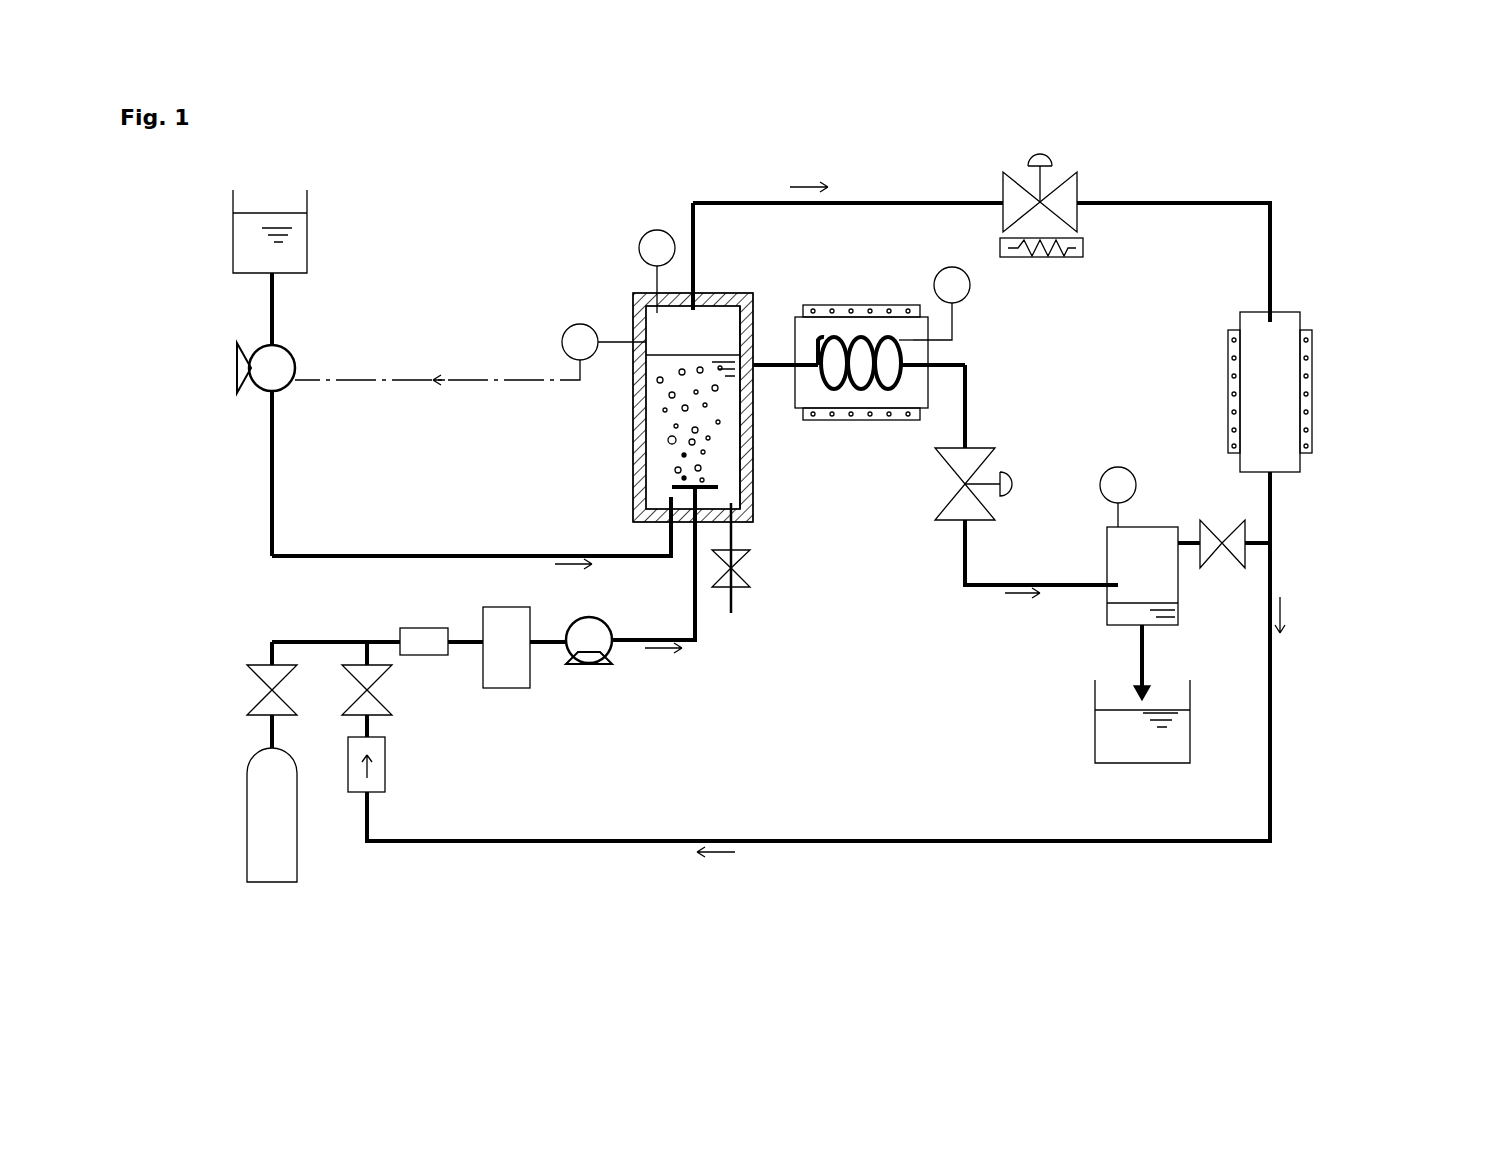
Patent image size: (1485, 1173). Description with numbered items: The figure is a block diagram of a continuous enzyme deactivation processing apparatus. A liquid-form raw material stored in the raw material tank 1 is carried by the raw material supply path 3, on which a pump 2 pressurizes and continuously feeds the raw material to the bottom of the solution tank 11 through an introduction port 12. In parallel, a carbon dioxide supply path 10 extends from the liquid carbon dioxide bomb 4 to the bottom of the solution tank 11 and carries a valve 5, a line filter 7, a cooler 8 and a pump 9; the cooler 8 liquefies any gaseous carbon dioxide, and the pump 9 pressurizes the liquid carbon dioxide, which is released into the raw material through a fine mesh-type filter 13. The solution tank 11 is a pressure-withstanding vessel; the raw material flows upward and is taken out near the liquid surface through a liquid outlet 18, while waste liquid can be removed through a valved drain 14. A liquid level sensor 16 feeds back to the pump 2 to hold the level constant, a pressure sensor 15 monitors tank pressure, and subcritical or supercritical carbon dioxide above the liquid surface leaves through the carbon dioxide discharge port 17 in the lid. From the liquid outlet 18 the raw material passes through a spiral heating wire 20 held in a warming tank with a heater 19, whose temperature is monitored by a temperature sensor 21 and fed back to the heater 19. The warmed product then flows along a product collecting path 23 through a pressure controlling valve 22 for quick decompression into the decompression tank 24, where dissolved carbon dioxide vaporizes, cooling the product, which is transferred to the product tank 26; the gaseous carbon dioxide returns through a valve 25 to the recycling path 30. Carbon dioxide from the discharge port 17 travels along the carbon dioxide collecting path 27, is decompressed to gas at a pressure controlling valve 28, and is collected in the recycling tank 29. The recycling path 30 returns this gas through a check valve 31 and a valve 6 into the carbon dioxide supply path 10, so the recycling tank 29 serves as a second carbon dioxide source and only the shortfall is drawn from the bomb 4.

The raw material tank 1 is at (308, 241).
The pump 2 is at (295, 362).
The raw material supply path 3 is at (483, 553).
The liquid carbon dioxide bomb 4 is at (276, 885).
The valve 5 is at (262, 665).
The valve 6 is at (355, 665).
The line filter 7 is at (424, 628).
The cooler 8 is at (507, 690).
The pump 9 is at (594, 668).
The carbon dioxide supply path 10 is at (698, 620).
The solution tank 11 is at (633, 440).
The introduction port 12 is at (665, 500).
The mesh-type filter 13 is at (718, 485).
The drain 14 is at (733, 533).
The pressure sensor 15 is at (640, 243).
The liquid level sensor 16 is at (570, 325).
The carbon dioxide discharge port 17 is at (710, 293).
The liquid outlet 18 is at (753, 320).
The heater 19 is at (880, 303).
The spiral heating wire 20 is at (848, 333).
The temperature sensor 21 is at (970, 292).
The pressure controlling valve 22 is at (984, 447).
The product collecting path 23 is at (995, 592).
The decompression tank 24 is at (1160, 527).
The valve 25 is at (1205, 565).
The product tank 26 is at (1095, 725).
The carbon dioxide collecting path 27 is at (880, 196).
The pressure controlling valve 28 is at (1080, 192).
The recycling tank 29 is at (1296, 312).
The recycling path 30 is at (885, 838).
The check valve 31 is at (385, 762).